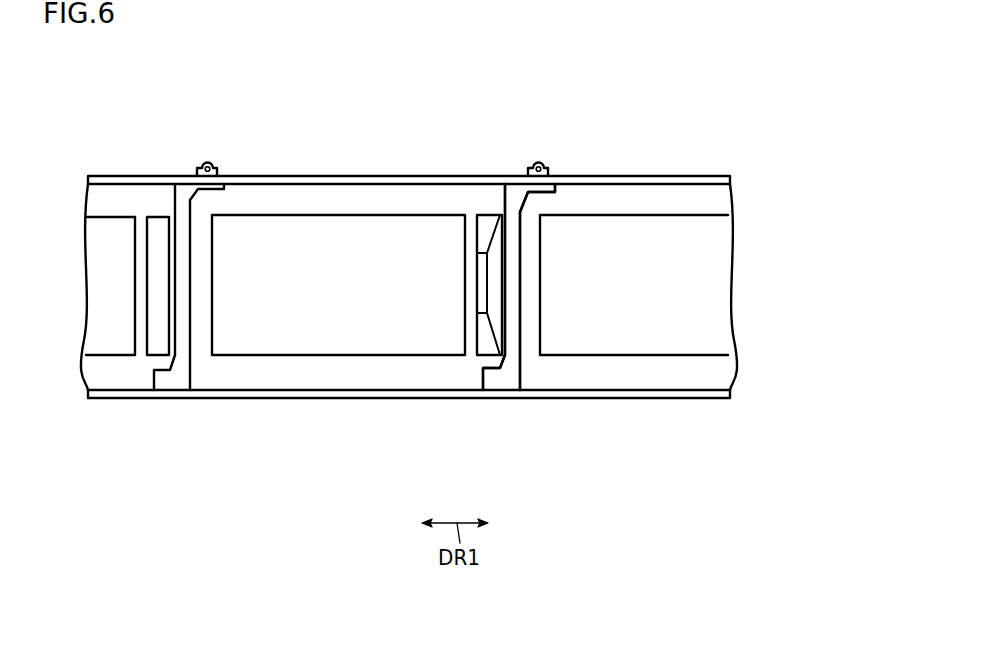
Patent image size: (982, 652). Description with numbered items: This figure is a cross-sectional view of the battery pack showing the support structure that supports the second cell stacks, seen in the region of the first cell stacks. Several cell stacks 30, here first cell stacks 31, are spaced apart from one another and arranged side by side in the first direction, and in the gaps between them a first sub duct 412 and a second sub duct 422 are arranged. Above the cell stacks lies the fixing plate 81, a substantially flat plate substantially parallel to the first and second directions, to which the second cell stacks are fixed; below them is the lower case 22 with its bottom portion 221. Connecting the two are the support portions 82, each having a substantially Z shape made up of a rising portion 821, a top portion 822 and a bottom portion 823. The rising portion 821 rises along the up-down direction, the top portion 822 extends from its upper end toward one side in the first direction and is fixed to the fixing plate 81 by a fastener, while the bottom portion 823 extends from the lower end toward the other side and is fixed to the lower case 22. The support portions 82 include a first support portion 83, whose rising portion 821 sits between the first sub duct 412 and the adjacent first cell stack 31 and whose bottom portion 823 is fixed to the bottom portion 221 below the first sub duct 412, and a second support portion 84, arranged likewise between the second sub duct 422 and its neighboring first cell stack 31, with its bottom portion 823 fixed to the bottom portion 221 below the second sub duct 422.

The lower case 22 is at (409, 342).
The bottom portion 221 is at (679, 396).
The cell stack 30 is at (405, 204).
The first cell stack 31 is at (685, 243).
The fixing plate 81 is at (323, 177).
The support portion 82 is at (392, 291).
The first support portion 83 is at (383, 291).
The second support portion 84 is at (556, 342).
The first sub duct 412 is at (157, 215).
The second sub duct 422 is at (486, 215).
The rising portion 821 is at (185, 268).
The top portion 822 is at (188, 180).
The bottom portion 823 is at (167, 377).